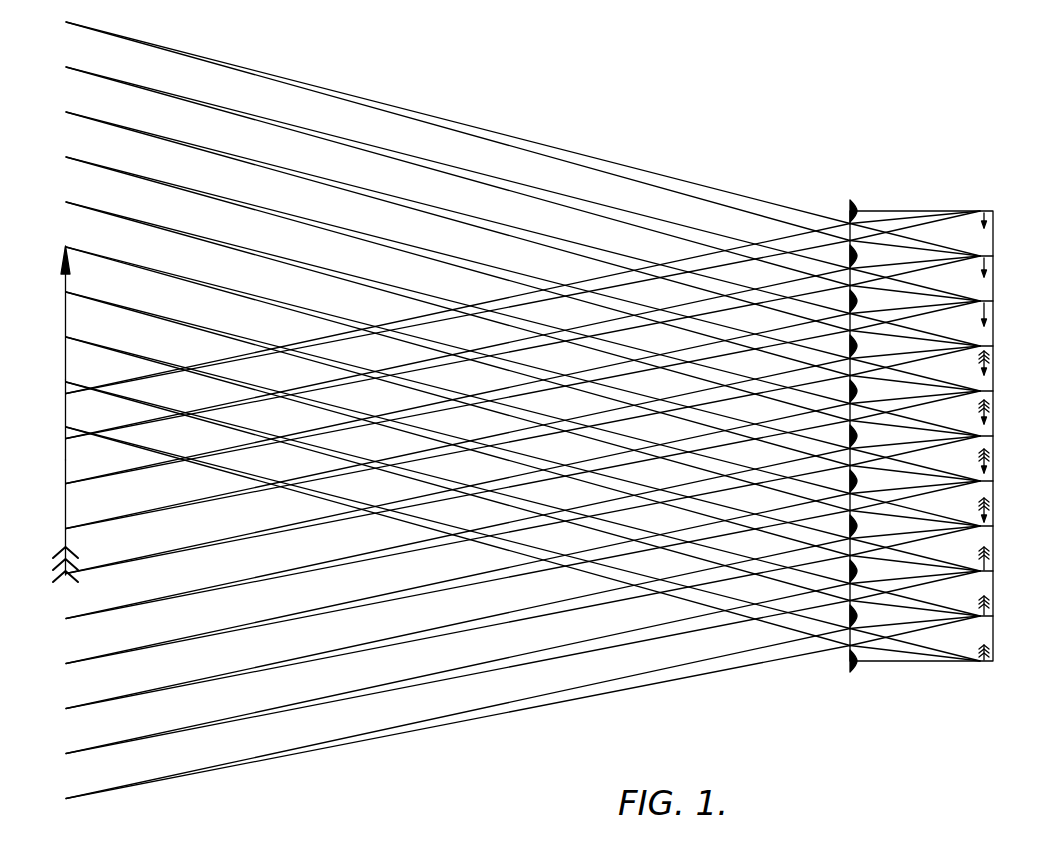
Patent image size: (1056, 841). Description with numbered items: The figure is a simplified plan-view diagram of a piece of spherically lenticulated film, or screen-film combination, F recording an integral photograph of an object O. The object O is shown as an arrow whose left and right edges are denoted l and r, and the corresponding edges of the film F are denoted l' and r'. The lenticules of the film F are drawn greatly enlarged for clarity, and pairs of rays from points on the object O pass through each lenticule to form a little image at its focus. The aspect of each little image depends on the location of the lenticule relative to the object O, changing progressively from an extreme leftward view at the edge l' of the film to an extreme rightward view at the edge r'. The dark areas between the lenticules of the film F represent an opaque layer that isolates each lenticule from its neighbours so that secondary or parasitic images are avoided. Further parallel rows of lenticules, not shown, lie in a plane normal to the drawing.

The right edge of the object r is at (46, 305).
The object o is at (42, 420).
The left edge of the object l is at (44, 523).
The spherically lenticulated film F is at (921, 453).
The right edge of the film r' is at (1006, 304).
The left edge of the film l' is at (984, 573).